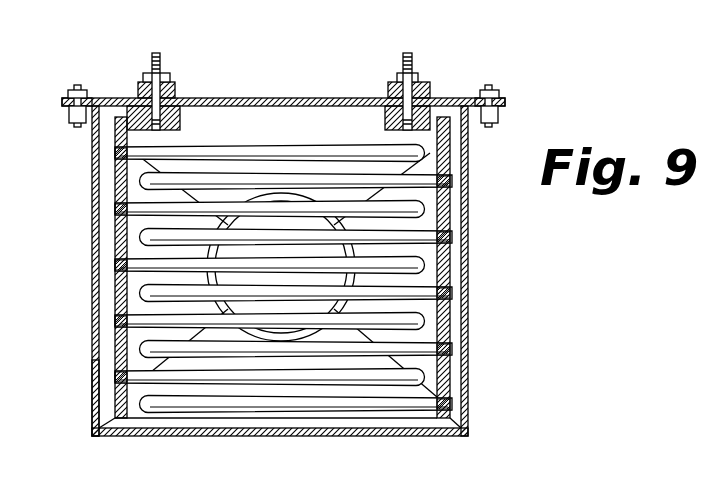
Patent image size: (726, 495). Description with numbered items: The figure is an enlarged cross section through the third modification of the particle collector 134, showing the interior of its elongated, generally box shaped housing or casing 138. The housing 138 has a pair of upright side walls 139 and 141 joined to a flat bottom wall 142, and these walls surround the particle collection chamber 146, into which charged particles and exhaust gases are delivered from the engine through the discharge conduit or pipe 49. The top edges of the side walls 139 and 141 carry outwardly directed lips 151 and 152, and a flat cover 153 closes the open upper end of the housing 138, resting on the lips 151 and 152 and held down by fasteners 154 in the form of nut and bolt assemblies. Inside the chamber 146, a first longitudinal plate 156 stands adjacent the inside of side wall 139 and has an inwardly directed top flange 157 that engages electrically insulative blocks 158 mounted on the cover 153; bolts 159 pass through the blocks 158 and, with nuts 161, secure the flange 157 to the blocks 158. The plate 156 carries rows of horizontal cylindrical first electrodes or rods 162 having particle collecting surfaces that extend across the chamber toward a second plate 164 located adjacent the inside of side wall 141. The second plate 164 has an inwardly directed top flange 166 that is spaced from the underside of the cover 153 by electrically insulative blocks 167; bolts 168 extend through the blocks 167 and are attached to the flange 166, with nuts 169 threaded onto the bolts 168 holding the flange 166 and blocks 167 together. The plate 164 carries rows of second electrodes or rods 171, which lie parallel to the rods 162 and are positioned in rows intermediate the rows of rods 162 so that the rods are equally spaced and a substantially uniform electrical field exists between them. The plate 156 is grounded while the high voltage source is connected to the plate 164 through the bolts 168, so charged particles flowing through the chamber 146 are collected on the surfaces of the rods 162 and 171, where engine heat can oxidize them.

The particle collector 134 is at (522, 60).
The fasteners 154 is at (80, 89).
The bolts 159 is at (157, 52).
The nuts 161 is at (169, 74).
The electrically insulative blocks 158 is at (178, 106).
The top flange 157 is at (180, 127).
The lip 151 is at (63, 114).
The cover 153 is at (272, 100).
The bolts 168 is at (409, 53).
The nuts 169 is at (415, 75).
The electrically insulative blocks 167 is at (392, 96).
The top flange 166 is at (385, 125).
The first electrodes or rods 162 is at (311, 150).
The discharge conduit or pipe 49 is at (279, 198).
The lip 152 is at (501, 118).
The second electrodes or rods 171 is at (140, 182).
The first longitudinal plate 156 is at (115, 238).
The housing or casing 138 is at (92, 307).
The side wall 139 is at (92, 398).
The bottom wall 142 is at (215, 429).
The particle collection chamber 146 is at (282, 420).
The side wall 141 is at (468, 279).
The second plate 164 is at (450, 377).